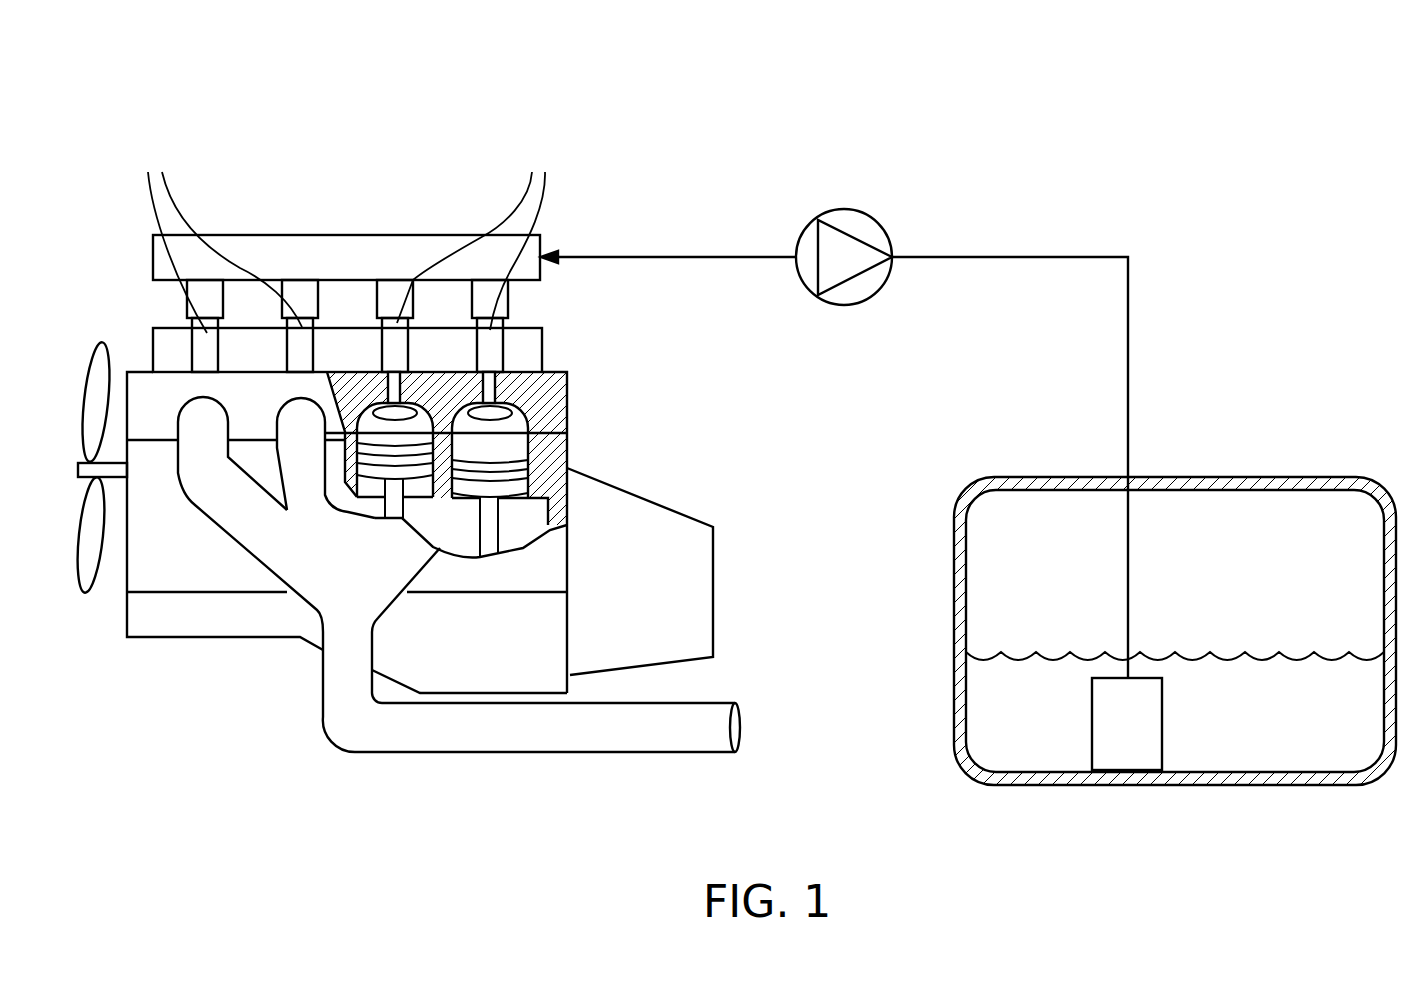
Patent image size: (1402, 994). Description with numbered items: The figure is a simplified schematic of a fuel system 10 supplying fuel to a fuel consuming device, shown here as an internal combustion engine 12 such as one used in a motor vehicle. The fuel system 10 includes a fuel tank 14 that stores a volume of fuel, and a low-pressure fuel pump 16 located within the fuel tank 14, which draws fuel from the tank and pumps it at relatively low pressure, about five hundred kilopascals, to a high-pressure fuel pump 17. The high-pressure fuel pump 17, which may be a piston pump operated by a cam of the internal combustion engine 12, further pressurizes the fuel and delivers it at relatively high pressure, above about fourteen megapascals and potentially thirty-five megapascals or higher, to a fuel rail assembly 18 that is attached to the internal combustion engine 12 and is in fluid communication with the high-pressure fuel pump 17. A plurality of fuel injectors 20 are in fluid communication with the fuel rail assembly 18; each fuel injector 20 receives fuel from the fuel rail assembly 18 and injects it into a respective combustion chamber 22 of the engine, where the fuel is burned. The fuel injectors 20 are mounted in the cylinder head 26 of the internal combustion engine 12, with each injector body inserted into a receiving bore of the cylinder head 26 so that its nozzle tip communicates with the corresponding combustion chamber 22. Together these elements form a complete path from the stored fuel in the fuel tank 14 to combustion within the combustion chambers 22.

The fuel system 10 is at (343, 132).
The internal combustion engine 12 is at (142, 573).
The fuel tank 14 is at (1004, 481).
The low-pressure fuel pump 16 is at (1136, 748).
The high-pressure fuel pump 17 is at (844, 209).
The fuel rail assembly 18 is at (270, 237).
The fuel injectors 20 is at (347, 271).
The combustion chambers 22 is at (420, 437).
The cylinder head 26 is at (562, 402).